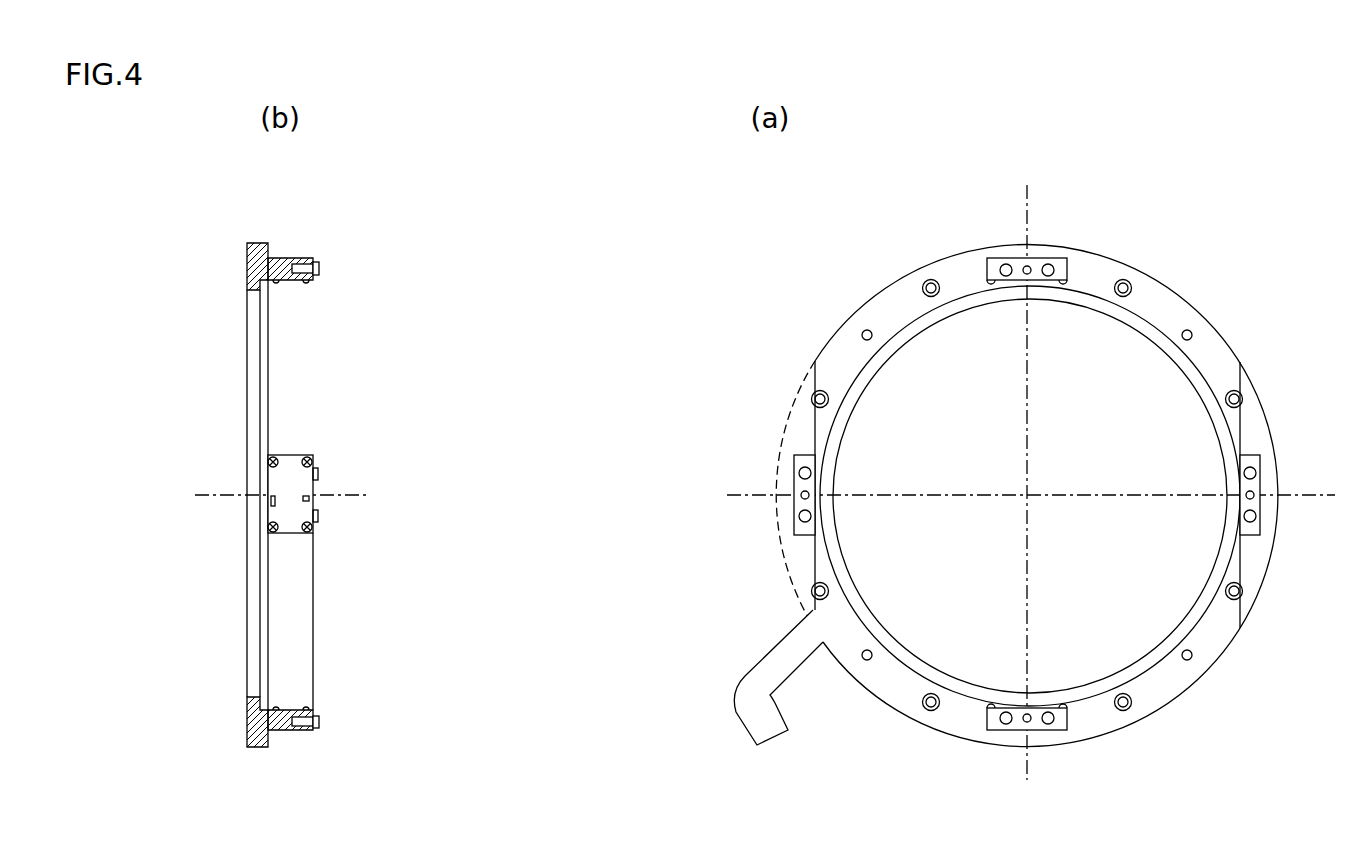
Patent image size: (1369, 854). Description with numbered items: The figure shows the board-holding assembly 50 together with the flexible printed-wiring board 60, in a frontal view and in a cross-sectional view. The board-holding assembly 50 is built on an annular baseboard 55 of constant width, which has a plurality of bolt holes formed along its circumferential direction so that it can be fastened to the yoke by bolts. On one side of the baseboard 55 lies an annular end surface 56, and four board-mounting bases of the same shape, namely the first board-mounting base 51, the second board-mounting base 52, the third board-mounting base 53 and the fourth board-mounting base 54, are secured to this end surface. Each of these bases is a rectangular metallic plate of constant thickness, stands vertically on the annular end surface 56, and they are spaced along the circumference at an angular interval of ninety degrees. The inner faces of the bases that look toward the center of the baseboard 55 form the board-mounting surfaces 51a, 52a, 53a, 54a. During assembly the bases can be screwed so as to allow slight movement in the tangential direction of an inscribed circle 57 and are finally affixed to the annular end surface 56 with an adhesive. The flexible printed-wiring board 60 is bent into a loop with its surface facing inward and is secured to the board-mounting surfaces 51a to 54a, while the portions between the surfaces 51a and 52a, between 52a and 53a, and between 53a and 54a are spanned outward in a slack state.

The board-holding assembly 50 is at (900, 270).
The first board-mounting base 51 is at (1040, 262).
The board-mounting surface 51a is at (1020, 283).
The second board-mounting base 52 is at (795, 480).
The board-mounting surface 52a is at (815, 480).
The third board-mounting base 53 is at (1013, 730).
The board-mounting surface 53a is at (1010, 708).
The fourth board-mounting base 54 is at (1260, 500).
The board-mounting surface 54a is at (1240, 505).
The annular baseboard 55 is at (940, 258).
The annular end surface 56 is at (1100, 283).
The inscribed circle 57 is at (893, 645).
The flexible printed-wiring board 60 is at (810, 382).